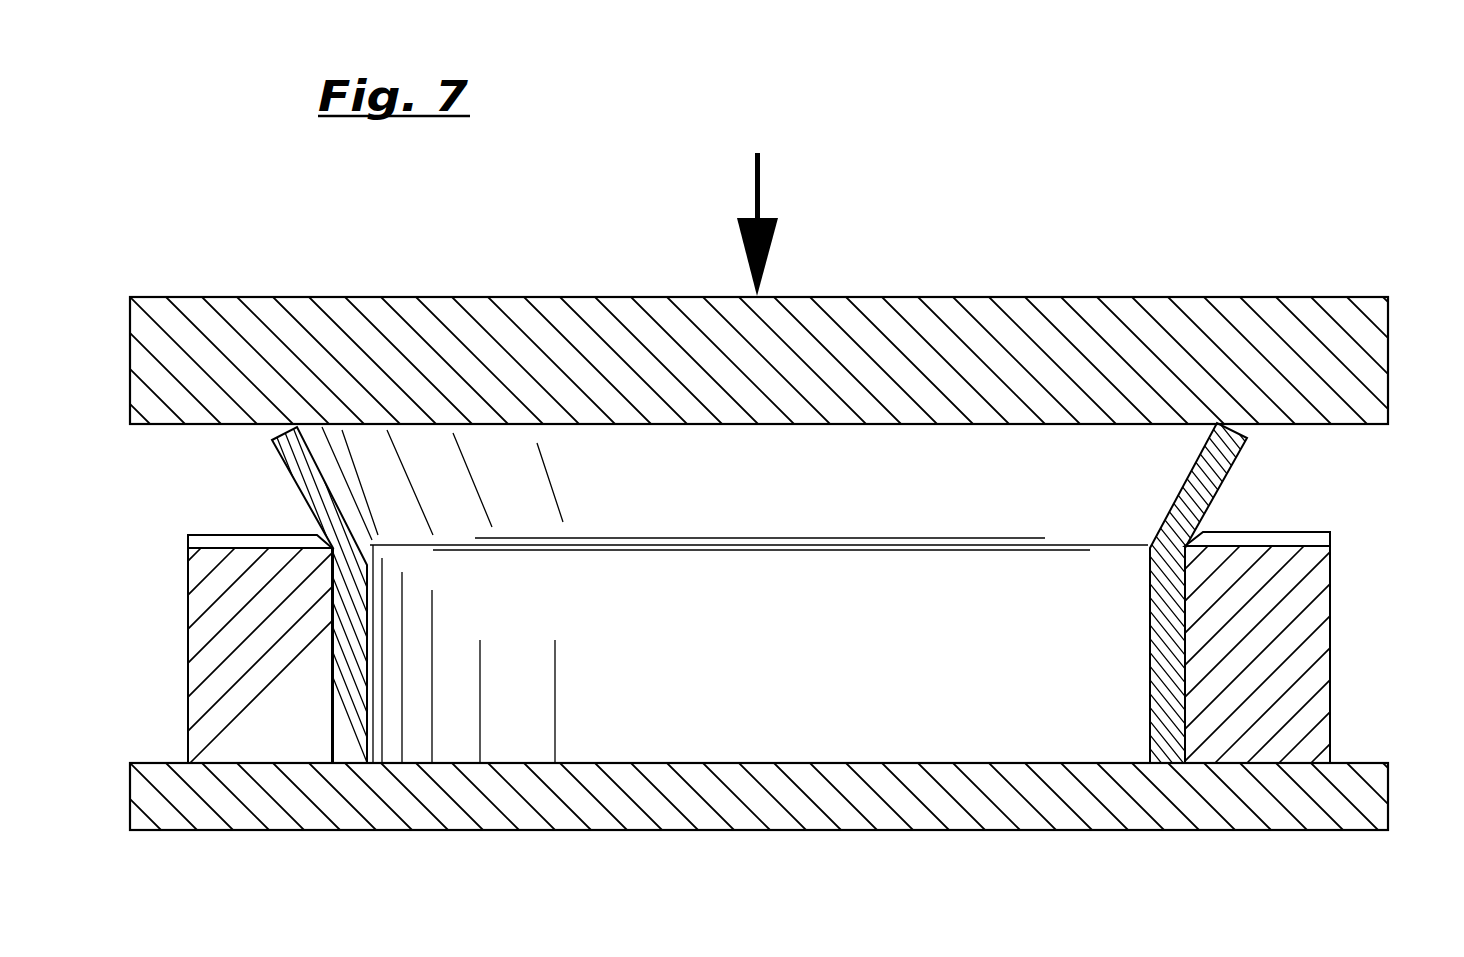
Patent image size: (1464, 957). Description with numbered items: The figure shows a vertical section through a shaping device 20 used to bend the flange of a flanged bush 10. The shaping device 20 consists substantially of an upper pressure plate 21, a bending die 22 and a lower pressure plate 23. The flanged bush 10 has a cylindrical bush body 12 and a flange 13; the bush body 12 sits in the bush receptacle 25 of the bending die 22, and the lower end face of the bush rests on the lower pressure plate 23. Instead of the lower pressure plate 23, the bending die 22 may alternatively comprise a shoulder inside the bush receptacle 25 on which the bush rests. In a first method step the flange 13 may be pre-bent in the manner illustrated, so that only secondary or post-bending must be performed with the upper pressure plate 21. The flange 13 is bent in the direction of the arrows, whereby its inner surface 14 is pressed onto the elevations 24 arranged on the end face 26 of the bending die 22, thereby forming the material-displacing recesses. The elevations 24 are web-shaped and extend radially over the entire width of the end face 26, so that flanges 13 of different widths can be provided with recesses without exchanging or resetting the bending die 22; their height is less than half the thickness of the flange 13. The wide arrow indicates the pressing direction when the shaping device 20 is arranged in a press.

The flanged bush 10 is at (1198, 695).
The bush body 12 is at (1153, 728).
The flange 13 is at (1172, 440).
The inner surface 14 is at (287, 468).
The shaping device 20 is at (1006, 208).
The upper pressure plate 21 is at (606, 333).
The bending die 22 is at (1340, 594).
The lower pressure plate 23 is at (890, 793).
The elevations 24 is at (231, 532).
The bush receptacle 25 is at (338, 630).
The end face 26 is at (212, 540).